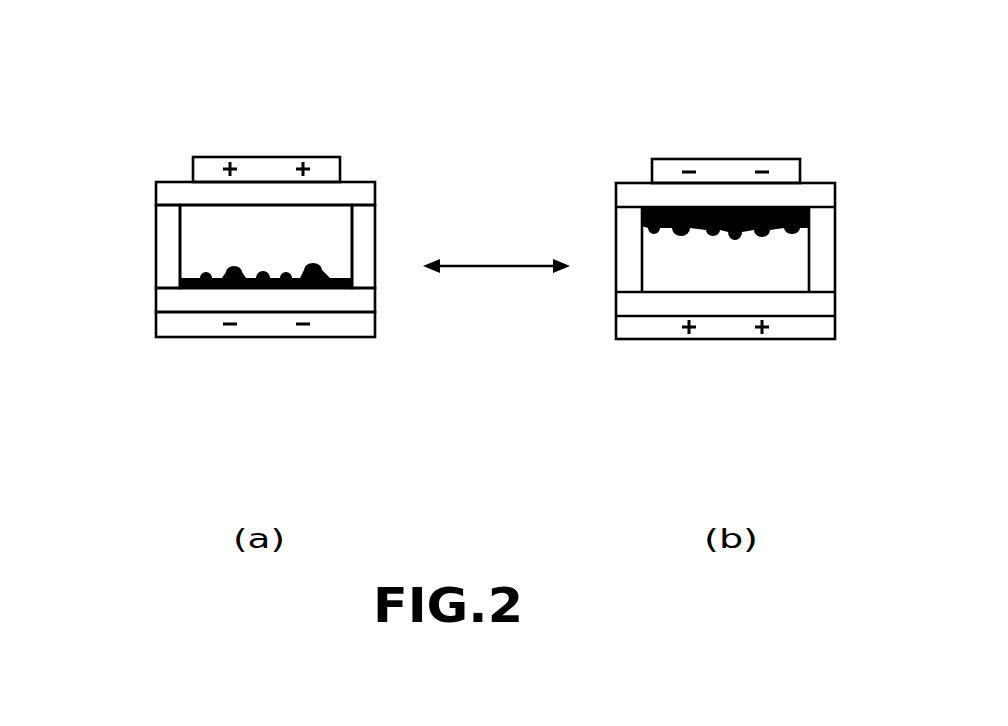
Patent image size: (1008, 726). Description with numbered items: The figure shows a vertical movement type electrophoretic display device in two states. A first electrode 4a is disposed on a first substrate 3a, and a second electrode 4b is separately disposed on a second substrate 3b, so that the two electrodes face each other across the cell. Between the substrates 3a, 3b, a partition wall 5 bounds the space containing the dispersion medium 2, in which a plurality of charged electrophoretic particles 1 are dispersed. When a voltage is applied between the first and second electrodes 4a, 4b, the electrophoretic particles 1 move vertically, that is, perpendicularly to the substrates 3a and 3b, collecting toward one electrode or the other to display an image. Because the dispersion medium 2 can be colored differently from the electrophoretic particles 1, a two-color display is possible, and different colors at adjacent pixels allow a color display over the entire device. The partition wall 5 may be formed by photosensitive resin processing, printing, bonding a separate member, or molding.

The electrophoretic particles 1 is at (267, 290).
The dispersion medium 2 is at (272, 215).
The first substrate 3a is at (357, 193).
The second substrate 3b is at (368, 298).
The first electrode 4a is at (203, 165).
The second electrode 4b is at (192, 330).
The partition wall 5 is at (163, 258).